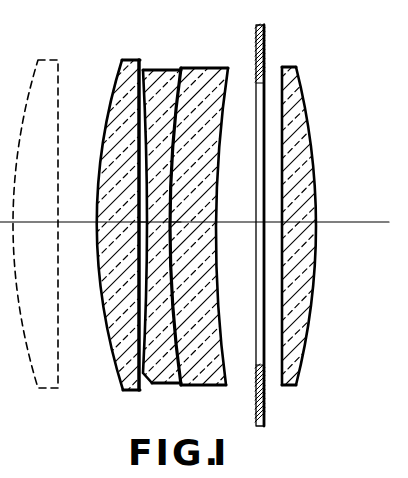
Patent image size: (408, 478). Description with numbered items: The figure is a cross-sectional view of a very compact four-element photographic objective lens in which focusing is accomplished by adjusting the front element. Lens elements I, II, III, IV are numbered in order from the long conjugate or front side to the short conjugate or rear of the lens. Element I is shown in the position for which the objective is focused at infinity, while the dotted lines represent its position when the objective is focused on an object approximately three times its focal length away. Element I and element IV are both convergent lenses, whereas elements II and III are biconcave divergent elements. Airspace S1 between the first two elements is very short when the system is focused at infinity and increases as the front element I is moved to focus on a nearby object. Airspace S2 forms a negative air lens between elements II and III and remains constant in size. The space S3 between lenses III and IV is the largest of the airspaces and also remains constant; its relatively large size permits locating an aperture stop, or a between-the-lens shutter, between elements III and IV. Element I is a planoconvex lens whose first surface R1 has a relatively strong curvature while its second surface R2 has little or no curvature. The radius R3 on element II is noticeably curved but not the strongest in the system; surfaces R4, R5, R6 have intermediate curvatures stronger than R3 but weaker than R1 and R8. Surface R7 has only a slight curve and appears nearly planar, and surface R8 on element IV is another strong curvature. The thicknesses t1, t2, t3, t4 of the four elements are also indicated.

The first surface R1 is at (110, 106).
The second surface R2 is at (139, 61).
The radius on element II R3 is at (146, 72).
The surface R4 is at (148, 82).
The surface R5 is at (190, 68).
The surface R6 is at (225, 96).
The surface R7 is at (283, 88).
The surface on element IV R8 is at (298, 88).
The airspace S1 is at (145, 221).
The airspace S2 is at (170, 222).
The airspace S3 is at (248, 223).
The axial thickness of lens I t1 is at (128, 235).
The axial thickness of lens II t2 is at (168, 235).
The axial thickness of lens III t3 is at (215, 235).
The axial thickness of lens IV t4 is at (304, 232).
The lens element I is at (127, 391).
The lens element II is at (156, 385).
The lens element III is at (195, 386).
The lens element IV is at (284, 386).